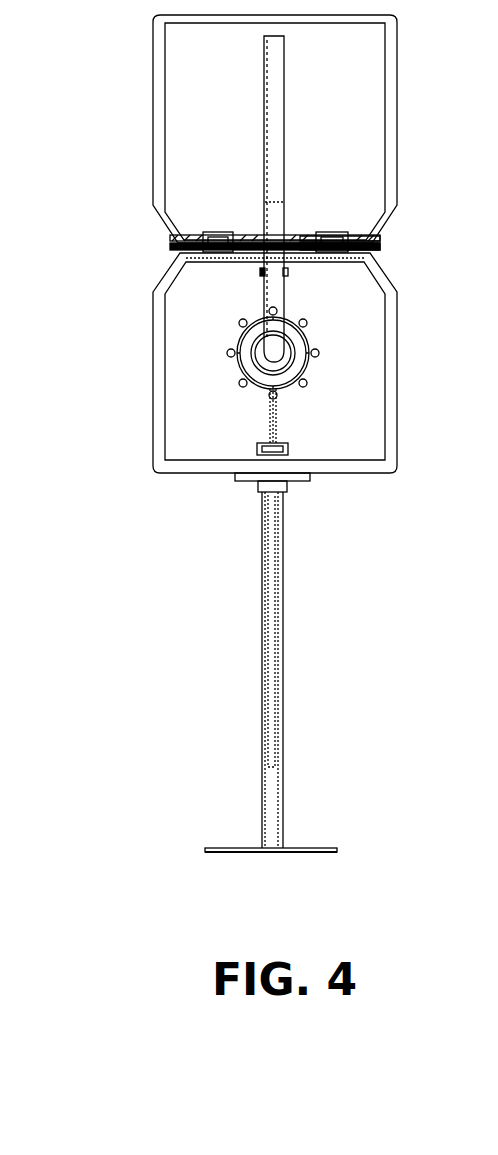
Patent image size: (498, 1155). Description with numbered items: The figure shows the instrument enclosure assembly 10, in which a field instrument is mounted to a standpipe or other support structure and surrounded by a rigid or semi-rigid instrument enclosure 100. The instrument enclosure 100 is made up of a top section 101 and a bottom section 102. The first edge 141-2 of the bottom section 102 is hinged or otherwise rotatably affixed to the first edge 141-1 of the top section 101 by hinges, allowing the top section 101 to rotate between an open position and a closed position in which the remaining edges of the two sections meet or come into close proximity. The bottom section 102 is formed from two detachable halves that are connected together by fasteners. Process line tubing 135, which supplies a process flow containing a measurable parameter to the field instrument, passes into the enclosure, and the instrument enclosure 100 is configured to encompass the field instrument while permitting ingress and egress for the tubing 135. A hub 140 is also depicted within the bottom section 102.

The instrument enclosure assembly 10 is at (390, 856).
The instrument enclosure 100 is at (110, 506).
The top section 101 is at (103, 127).
The bottom section 102 is at (127, 362).
The process line tubing 135 is at (264, 92).
The gear hub 140 is at (273, 353).
The first edge of top section 141-1 is at (318, 248).
The first edge of bottom section 141-2 is at (311, 250).